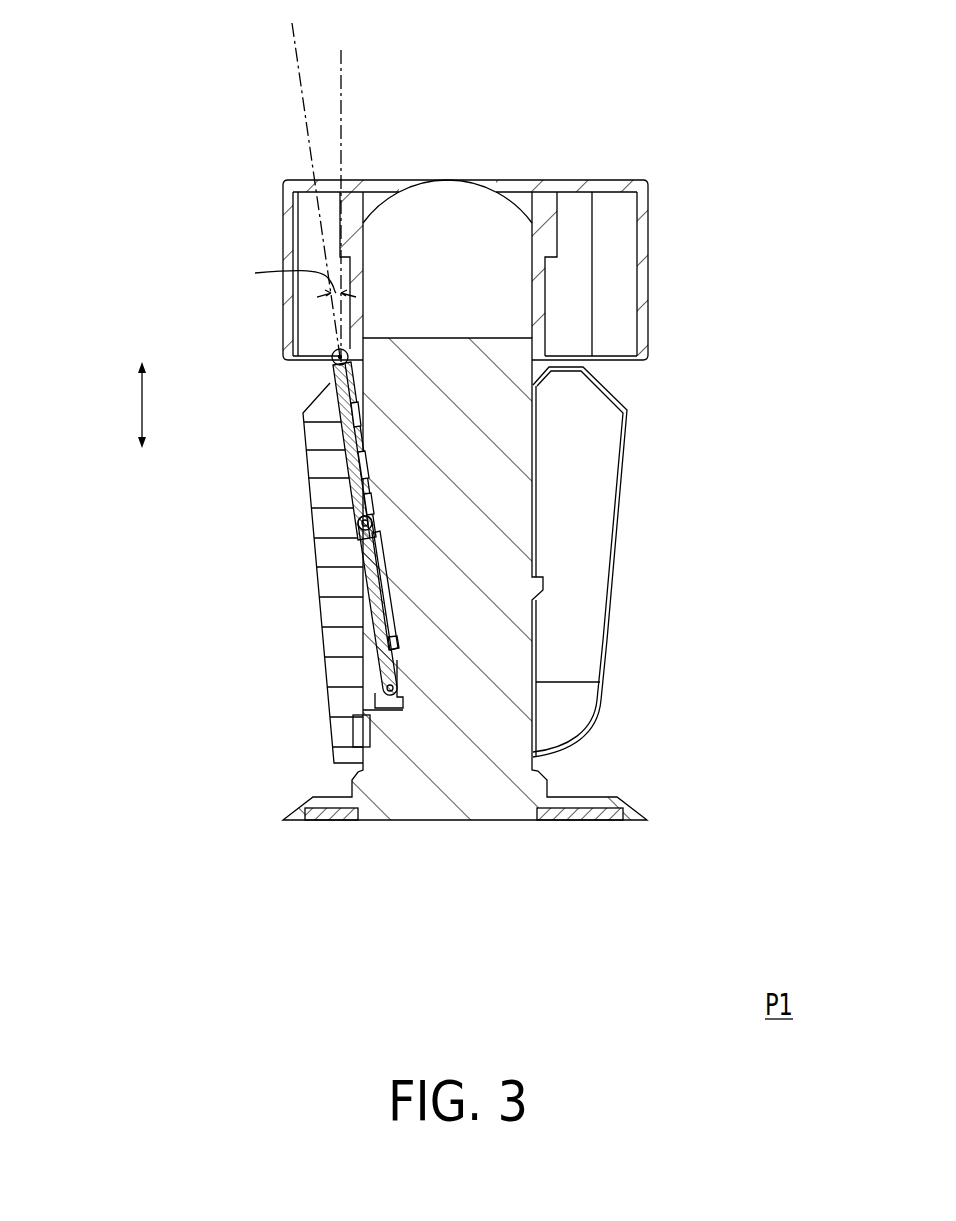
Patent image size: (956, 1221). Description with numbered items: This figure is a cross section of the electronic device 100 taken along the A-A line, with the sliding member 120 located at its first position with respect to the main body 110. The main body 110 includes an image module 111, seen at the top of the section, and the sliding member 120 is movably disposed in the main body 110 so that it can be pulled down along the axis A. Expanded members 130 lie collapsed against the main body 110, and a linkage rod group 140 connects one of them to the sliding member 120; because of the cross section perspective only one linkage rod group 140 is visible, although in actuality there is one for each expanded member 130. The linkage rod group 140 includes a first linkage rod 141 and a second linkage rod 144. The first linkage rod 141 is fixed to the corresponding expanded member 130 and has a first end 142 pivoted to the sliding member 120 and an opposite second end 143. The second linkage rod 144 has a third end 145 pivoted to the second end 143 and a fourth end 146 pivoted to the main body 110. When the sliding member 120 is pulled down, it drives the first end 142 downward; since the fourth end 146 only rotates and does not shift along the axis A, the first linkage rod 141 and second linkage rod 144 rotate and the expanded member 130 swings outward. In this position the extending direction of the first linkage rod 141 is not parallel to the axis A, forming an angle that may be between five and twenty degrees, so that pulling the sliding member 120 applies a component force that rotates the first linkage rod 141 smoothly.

The electronic device 100 is at (236, 137).
The main body 110 is at (445, 805).
The image module 111 is at (455, 198).
The sliding member 120 is at (652, 238).
The expanded member 130 is at (318, 437).
The linkage rod group 140 is at (140, 215).
The first linkage rod 141 is at (350, 462).
The first end 142 is at (332, 365).
The second end 143 is at (357, 500).
The second linkage rod 144 is at (283, 655).
The third end 145 is at (365, 537).
The fourth end 146 is at (380, 687).